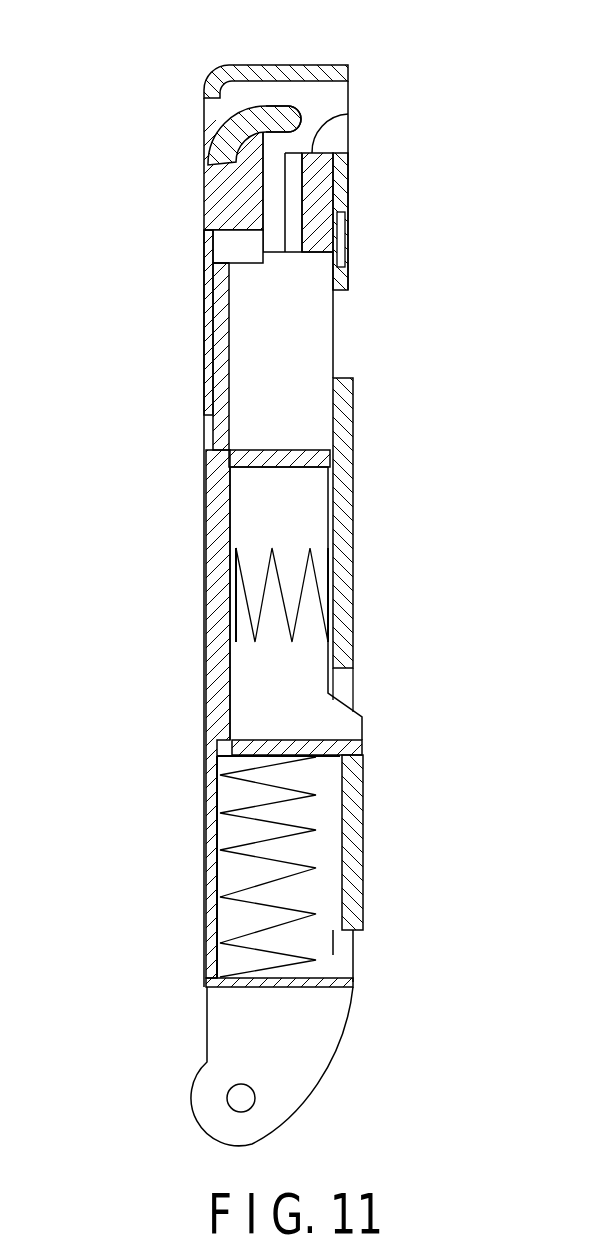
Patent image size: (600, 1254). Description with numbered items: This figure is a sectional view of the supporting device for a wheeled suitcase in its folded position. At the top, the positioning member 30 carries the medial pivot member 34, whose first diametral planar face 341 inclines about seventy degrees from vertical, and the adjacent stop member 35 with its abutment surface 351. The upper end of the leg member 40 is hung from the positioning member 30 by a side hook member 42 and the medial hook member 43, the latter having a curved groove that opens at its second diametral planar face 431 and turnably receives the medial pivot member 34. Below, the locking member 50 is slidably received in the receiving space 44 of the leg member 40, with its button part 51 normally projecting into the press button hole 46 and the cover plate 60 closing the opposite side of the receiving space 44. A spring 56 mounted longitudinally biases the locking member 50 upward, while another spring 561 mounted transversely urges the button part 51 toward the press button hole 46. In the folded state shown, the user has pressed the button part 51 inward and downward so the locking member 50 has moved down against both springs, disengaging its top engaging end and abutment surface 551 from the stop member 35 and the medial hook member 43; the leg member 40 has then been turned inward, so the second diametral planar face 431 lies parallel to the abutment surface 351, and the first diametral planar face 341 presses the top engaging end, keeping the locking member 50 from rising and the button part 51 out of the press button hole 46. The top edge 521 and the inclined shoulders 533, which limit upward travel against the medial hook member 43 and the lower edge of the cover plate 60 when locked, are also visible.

The positioning member 30 is at (327, 65).
The medial pivot member 34 is at (213, 148).
The first diametral planar face 341 is at (217, 195).
The medial hook member 43 is at (217, 126).
The second diametral planar face 431 is at (273, 115).
The side hook member 42 is at (286, 112).
The stop member 35 is at (338, 170).
The abutment surface 551 is at (348, 114).
The abutment surface 351 is at (340, 193).
The receiving space 44 is at (232, 238).
The top edge 521 is at (212, 253).
The leg member 40 is at (204, 294).
The press button hole 46 is at (210, 433).
The locking member 50 is at (208, 555).
The button part 51 is at (222, 627).
The spring 561 is at (302, 596).
The cover plate 60 is at (353, 472).
The inclined shoulder 533 is at (355, 697).
The spring 56 is at (290, 798).